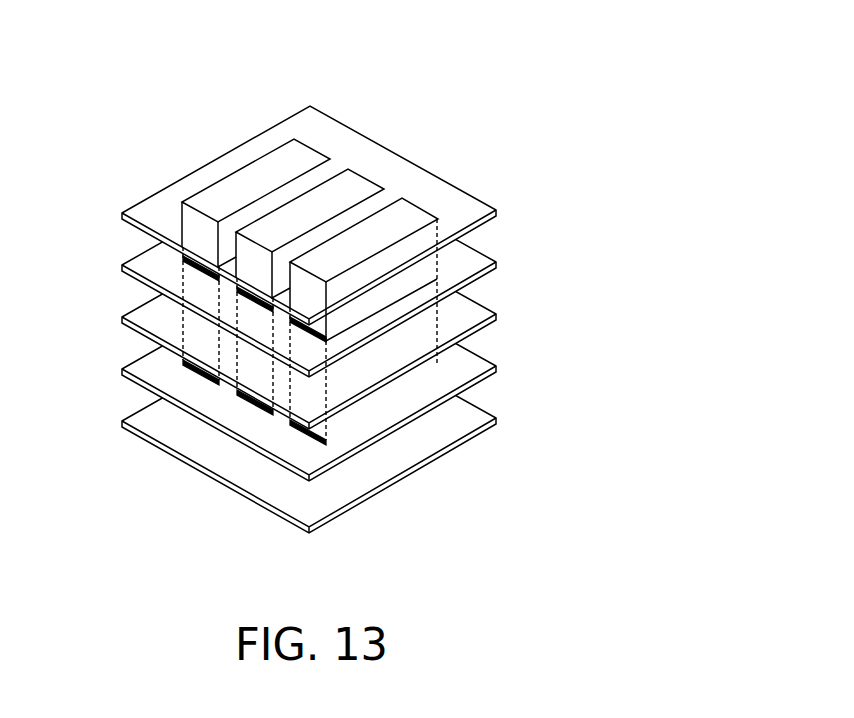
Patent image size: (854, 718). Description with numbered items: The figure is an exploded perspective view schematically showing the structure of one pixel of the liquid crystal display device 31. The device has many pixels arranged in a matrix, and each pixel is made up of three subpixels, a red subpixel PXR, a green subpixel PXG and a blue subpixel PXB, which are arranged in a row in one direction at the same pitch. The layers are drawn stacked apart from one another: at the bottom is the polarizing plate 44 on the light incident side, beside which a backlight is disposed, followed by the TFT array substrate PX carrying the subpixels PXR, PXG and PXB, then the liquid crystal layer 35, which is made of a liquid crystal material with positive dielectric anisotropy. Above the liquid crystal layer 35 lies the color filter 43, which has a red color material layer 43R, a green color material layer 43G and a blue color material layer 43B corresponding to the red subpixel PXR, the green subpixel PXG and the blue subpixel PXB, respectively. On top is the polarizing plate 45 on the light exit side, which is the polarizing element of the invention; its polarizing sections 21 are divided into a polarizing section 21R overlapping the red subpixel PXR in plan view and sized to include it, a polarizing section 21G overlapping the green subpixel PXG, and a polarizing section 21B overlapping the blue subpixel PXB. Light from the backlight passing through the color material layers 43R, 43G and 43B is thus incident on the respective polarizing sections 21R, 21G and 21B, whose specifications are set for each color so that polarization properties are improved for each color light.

The liquid crystal display device 31 is at (354, 280).
The polarizing plate 45 is at (284, 112).
The polarizing section 21R is at (310, 147).
The polarizing section 21G is at (358, 177).
The polarizing section 21B is at (410, 205).
The color filters 21 is at (371, 204).
The color filter 43 is at (498, 256).
The red color material layer 43R is at (187, 262).
The green color material layer 43G is at (240, 290).
The blue color material layer 43B is at (292, 320).
The liquid crystal layer 35 is at (498, 321).
The TFT array substrate PX is at (497, 372).
The red subpixel PXR is at (185, 366).
The green subpixel PXG is at (247, 395).
The blue subpixel PXB is at (297, 428).
The polarizing plate 44 is at (497, 422).